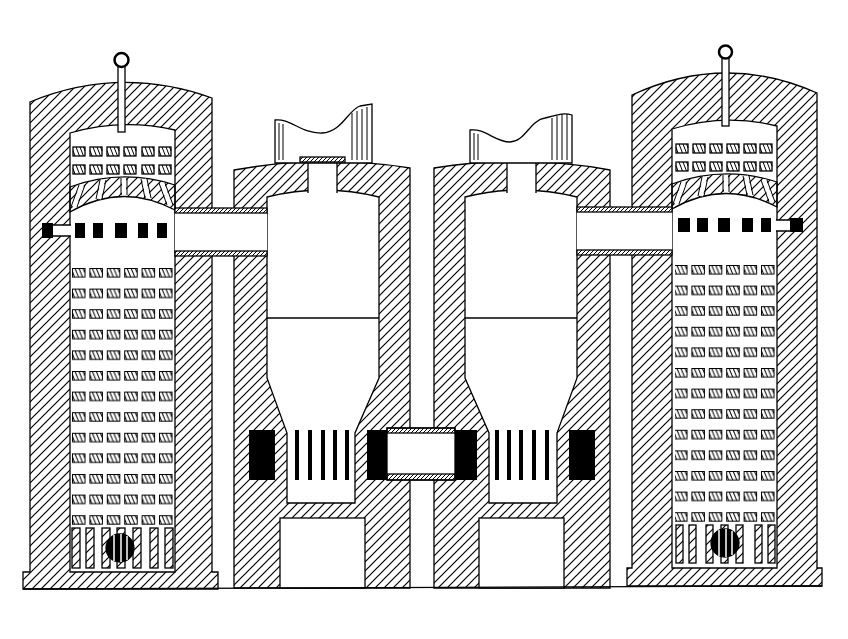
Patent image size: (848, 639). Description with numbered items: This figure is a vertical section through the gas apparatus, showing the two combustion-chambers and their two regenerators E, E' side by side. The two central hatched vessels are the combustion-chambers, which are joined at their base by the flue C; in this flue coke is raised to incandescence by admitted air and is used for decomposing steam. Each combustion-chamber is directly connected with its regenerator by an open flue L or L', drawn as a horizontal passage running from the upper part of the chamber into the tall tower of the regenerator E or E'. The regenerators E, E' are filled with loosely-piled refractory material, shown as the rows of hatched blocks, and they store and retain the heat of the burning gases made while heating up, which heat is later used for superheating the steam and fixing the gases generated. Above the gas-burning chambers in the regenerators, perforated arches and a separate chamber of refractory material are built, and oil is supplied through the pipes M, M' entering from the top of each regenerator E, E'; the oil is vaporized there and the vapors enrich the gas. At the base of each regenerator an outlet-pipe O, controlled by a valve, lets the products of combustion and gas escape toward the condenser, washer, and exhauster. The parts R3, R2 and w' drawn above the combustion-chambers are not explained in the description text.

The regenerator E' is at (120, 324).
The regenerator E is at (724, 320).
The oil pipe M' is at (136, 89).
The oil pipe M is at (741, 80).
The open flue L' is at (221, 197).
The open flue L is at (624, 197).
The left retort receiver R3 is at (293, 135).
The right retort receiver R2 is at (495, 138).
The perforated plate w' is at (419, 151).
The flue C is at (422, 454).
The outlet-pipe O is at (128, 570).